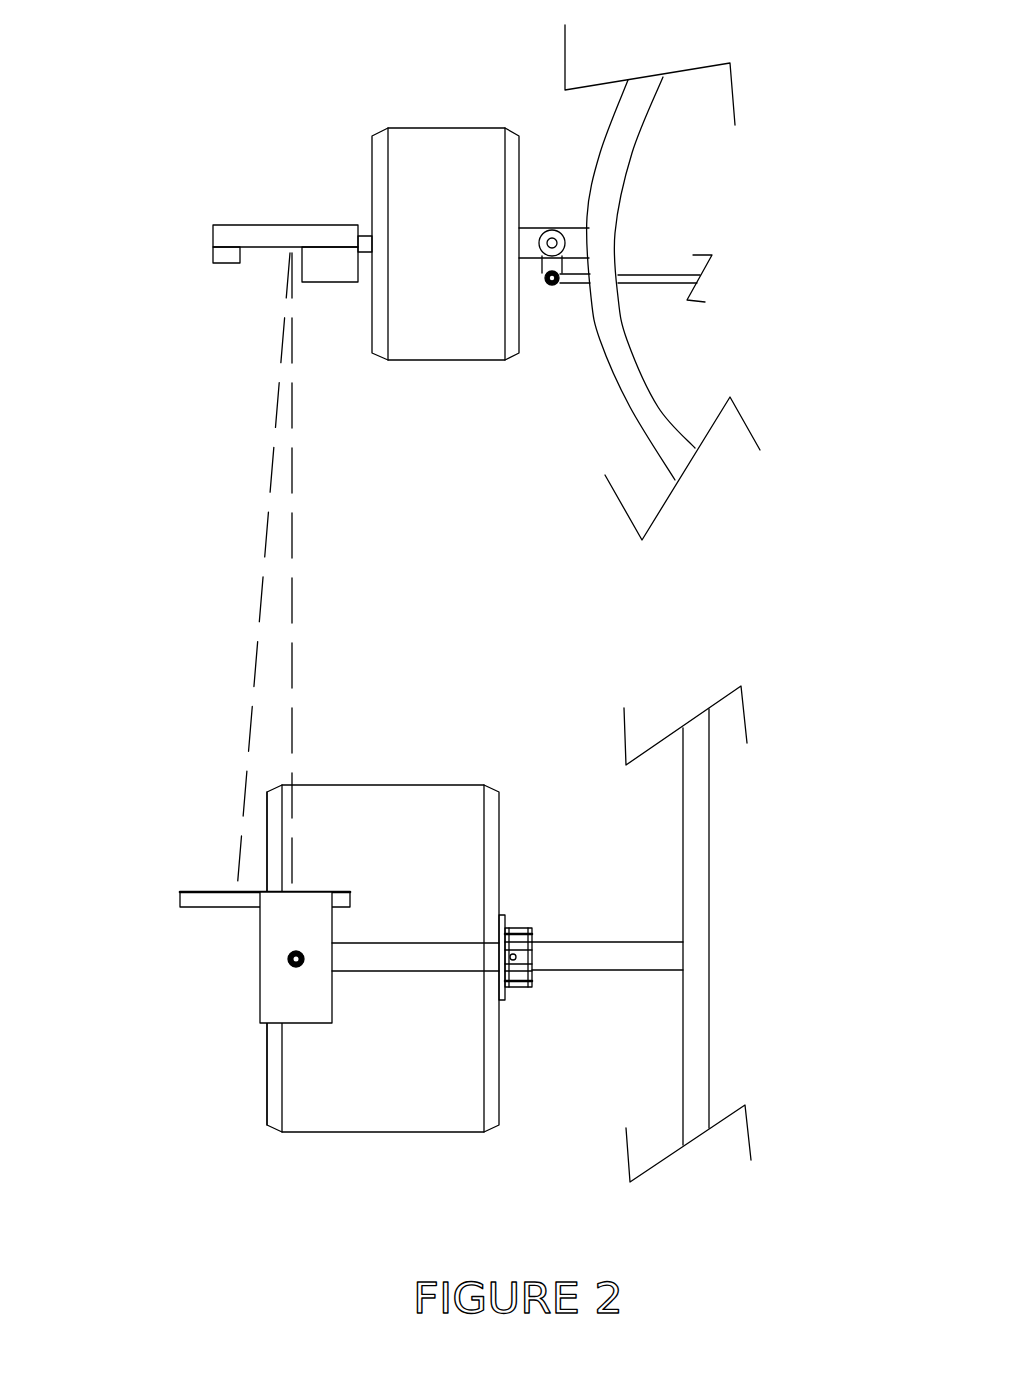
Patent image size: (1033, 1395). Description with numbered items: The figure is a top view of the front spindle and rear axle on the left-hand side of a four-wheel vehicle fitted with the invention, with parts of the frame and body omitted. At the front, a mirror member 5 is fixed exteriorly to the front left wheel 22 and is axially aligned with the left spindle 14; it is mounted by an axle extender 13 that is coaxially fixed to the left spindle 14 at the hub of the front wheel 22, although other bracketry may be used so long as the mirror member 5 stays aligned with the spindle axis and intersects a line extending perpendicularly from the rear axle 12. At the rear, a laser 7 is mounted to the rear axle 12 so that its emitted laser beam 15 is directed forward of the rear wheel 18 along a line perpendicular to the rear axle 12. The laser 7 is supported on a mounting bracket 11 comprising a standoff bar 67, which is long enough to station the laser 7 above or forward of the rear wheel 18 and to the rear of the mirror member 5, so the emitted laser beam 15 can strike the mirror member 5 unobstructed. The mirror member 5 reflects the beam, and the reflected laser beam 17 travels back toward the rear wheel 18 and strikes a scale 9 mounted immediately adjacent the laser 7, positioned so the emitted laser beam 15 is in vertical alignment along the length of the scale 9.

The mirror member 5 is at (250, 214).
The axle extender 13 is at (322, 179).
The front left wheel 22 is at (452, 199).
The left spindle 14 is at (543, 340).
The emitted laser beam 15 is at (376, 571).
The reflected laser beam 17 is at (205, 571).
The scale 9 is at (191, 950).
The laser 7 is at (246, 966).
The rear wheel 18 is at (332, 1018).
The standoff bar 67 is at (398, 1093).
The mounting bracket 11 is at (576, 916).
The rear axle 12 is at (606, 1008).